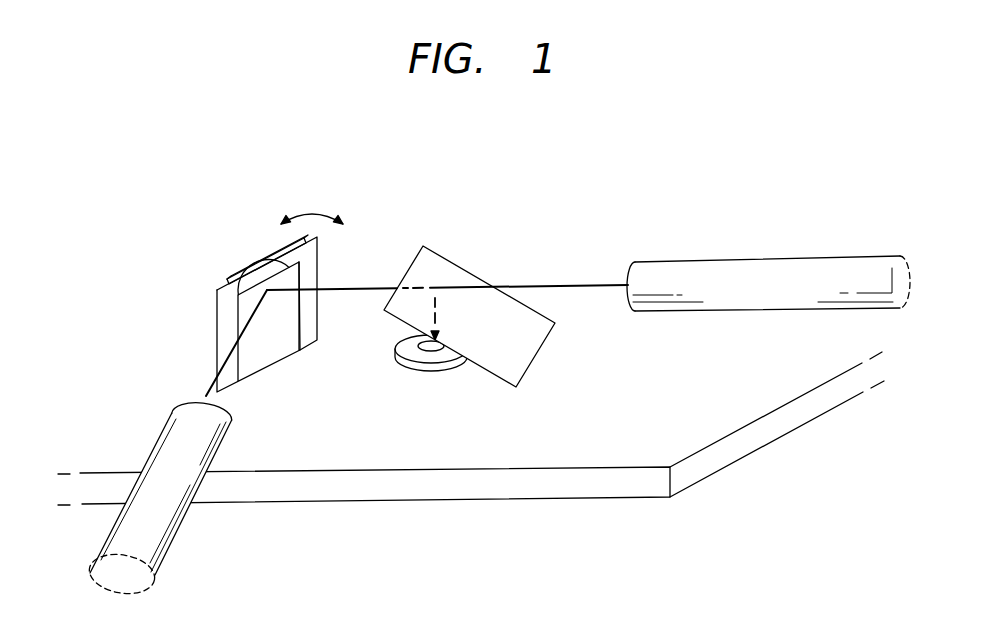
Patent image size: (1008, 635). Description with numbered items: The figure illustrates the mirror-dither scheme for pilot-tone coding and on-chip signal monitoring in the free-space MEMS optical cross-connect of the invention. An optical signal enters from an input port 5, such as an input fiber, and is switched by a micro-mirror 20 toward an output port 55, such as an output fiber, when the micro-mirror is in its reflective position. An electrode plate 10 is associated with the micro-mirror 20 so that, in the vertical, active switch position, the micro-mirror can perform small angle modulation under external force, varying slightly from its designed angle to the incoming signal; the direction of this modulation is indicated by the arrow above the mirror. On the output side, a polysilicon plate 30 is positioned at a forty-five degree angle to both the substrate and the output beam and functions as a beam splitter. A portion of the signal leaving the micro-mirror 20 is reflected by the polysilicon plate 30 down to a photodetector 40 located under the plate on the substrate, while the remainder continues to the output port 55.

The input port 5 is at (157, 556).
The electrode plate 10 is at (213, 312).
The micro-mirror 20 is at (258, 258).
The polysilicon plate 30 is at (480, 263).
The photodetector 40 is at (433, 382).
The output port 55 is at (742, 296).